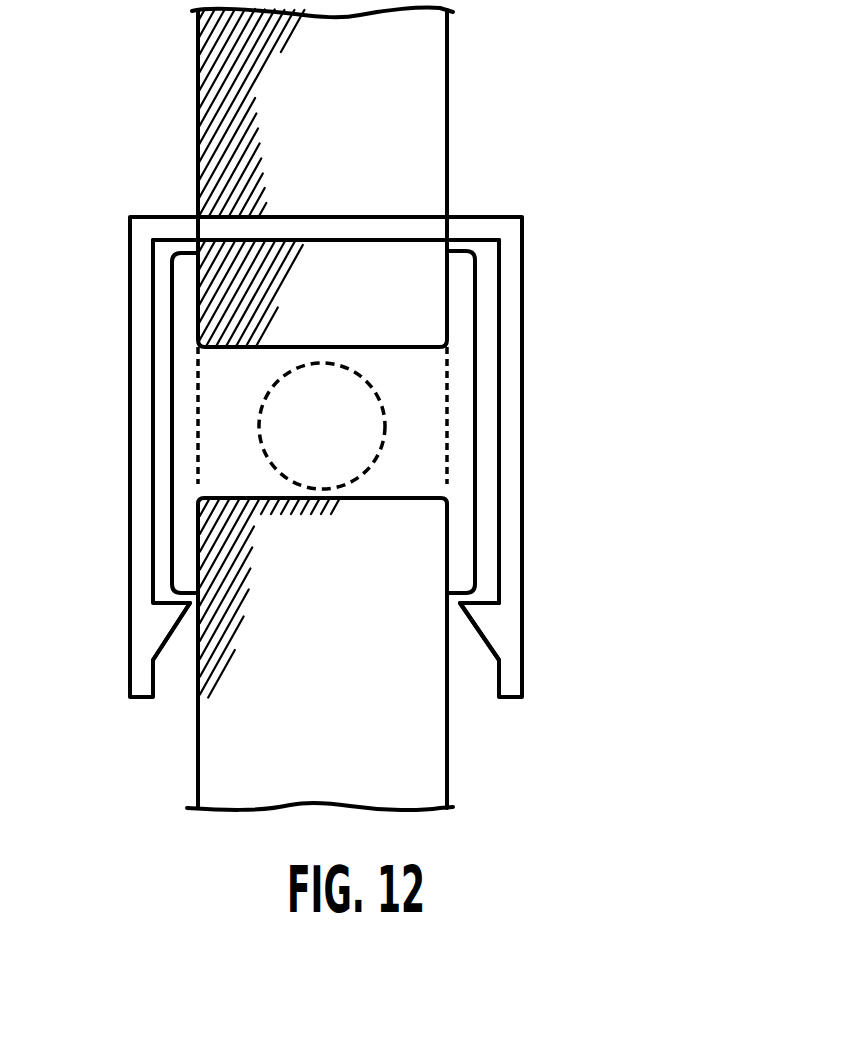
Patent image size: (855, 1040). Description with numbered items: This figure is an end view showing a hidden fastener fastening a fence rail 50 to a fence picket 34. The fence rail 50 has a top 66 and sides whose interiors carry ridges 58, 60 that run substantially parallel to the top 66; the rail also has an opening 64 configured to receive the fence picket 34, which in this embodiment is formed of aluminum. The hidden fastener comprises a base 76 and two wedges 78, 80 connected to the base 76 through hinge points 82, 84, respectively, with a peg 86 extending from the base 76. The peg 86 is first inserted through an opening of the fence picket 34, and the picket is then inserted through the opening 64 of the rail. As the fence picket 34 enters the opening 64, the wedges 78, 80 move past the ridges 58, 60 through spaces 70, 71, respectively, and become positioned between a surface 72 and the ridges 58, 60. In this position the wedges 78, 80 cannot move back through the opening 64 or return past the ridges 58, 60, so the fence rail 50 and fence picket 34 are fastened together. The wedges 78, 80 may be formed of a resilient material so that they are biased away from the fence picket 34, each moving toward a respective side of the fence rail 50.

The fence picket 34 is at (460, 65).
The fence rail 50 is at (108, 245).
The ridge 58 is at (168, 640).
The ridge 60 is at (482, 640).
The opening 64 is at (197, 216).
The top 66 is at (483, 217).
The space 70 is at (190, 640).
The space 71 is at (459, 640).
The surface 72 is at (490, 244).
The base 76 is at (242, 460).
The wedge 78 is at (172, 288).
The wedge 80 is at (462, 297).
The hinge point 82 is at (186, 422).
The hinge point 84 is at (460, 412).
The peg 86 is at (355, 473).